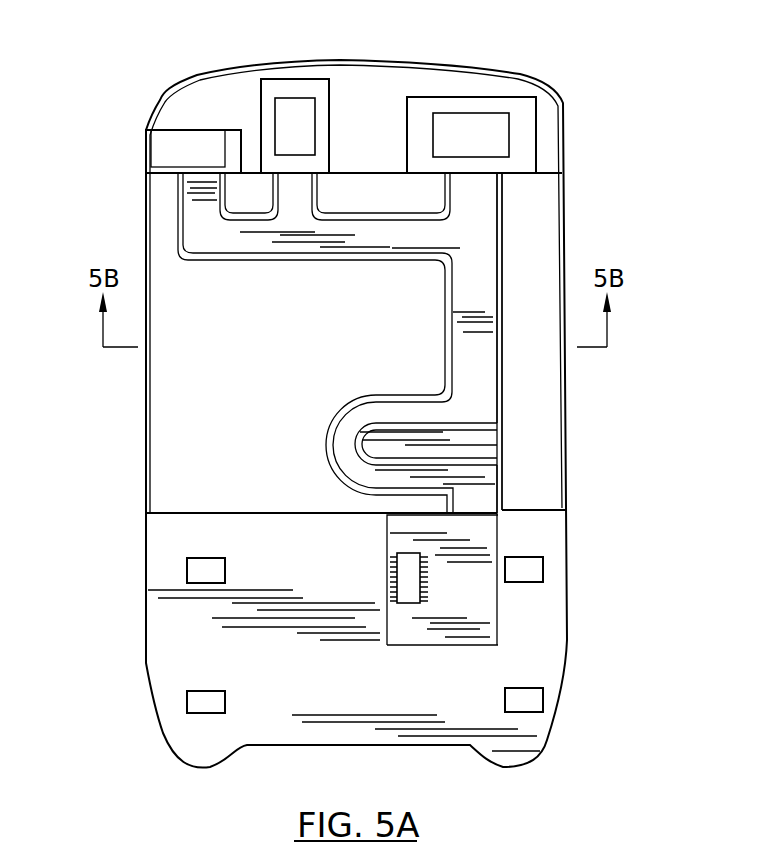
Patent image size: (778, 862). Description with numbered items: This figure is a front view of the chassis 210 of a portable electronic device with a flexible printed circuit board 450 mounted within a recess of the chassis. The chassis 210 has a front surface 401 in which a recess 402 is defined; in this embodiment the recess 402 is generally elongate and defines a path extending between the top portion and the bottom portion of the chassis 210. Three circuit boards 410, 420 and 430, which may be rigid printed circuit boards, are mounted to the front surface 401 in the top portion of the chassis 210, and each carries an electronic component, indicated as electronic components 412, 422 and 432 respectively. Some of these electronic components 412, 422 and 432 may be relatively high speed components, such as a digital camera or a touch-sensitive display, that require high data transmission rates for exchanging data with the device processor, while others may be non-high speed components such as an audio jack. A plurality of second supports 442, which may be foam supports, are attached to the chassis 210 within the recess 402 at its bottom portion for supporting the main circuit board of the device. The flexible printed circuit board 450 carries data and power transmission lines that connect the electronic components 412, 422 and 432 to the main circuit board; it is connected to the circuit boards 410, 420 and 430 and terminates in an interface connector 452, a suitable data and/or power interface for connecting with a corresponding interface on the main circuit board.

The chassis 210 is at (550, 83).
The front surface 401 is at (275, 365).
The recess 402 is at (500, 247).
The circuit board 410 is at (218, 128).
The electronic component 412 is at (153, 148).
The circuit board 420 is at (295, 79).
The electronic component 422 is at (318, 116).
The circuit board 430 is at (473, 95).
The electronic component 432 is at (510, 128).
The second supports 442 is at (186, 572).
The flexible printed circuit board 450 is at (472, 387).
The interface connector 452 is at (387, 580).